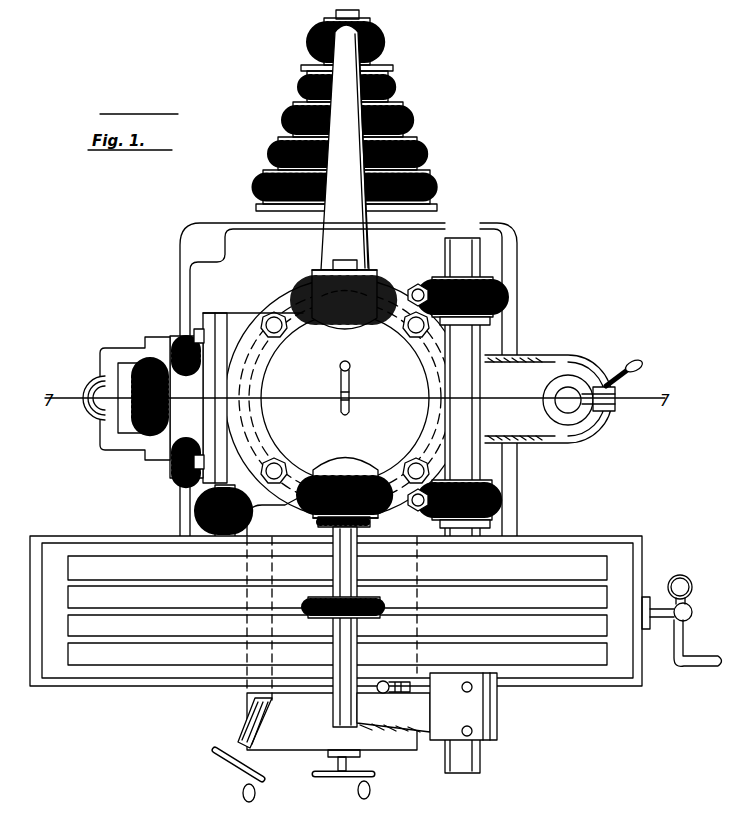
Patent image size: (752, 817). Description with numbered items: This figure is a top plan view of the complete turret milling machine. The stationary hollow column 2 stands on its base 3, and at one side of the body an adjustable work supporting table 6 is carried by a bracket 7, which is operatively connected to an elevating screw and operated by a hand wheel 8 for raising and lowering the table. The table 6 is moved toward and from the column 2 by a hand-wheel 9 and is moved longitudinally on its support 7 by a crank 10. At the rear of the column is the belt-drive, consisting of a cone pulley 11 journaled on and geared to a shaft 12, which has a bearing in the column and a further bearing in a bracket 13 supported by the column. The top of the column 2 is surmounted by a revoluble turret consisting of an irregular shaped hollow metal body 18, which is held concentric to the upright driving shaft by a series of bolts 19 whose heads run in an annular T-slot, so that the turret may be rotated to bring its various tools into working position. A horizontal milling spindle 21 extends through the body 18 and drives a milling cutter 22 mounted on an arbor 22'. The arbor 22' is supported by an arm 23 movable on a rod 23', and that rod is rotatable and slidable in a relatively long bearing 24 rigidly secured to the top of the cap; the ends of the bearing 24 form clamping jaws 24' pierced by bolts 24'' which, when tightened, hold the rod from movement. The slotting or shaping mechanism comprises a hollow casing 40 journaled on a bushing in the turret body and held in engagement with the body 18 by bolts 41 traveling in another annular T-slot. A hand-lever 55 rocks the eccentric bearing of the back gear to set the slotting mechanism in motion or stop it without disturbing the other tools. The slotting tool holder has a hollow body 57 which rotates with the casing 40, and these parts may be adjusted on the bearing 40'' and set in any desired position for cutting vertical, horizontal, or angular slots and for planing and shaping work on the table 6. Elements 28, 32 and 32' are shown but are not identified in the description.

The column 2 is at (300, 288).
The base 3 is at (517, 246).
The work supporting table 6 is at (322, 234).
The bracket 7 is at (302, 742).
The hand wheel 8 is at (243, 750).
The hand-wheel 9 is at (343, 775).
The crank 10 is at (682, 620).
The cone pulley 11 is at (376, 66).
The shaft 12 is at (361, 15).
The bracket 13 is at (345, 147).
The turret body 18 is at (345, 398).
The bolts 19 is at (280, 336).
The milling spindle 21 is at (344, 268).
The milling cutter 22 is at (330, 617).
The arbor 22' is at (364, 627).
The arbor support arm 23 is at (427, 706).
The rod 23' is at (477, 502).
The bearing 24 is at (548, 399).
The clamping jaws 24' is at (399, 416).
The bolts 24'' is at (444, 426).
The arm 28 is at (552, 358).
The bushing 32 is at (568, 400).
The clamp stud 32' is at (608, 411).
The casing 40 is at (199, 395).
The bearing 40'' is at (230, 376).
The bolts 41 is at (194, 335).
The hand-lever 55 is at (352, 364).
The tool holder body 57 is at (100, 398).